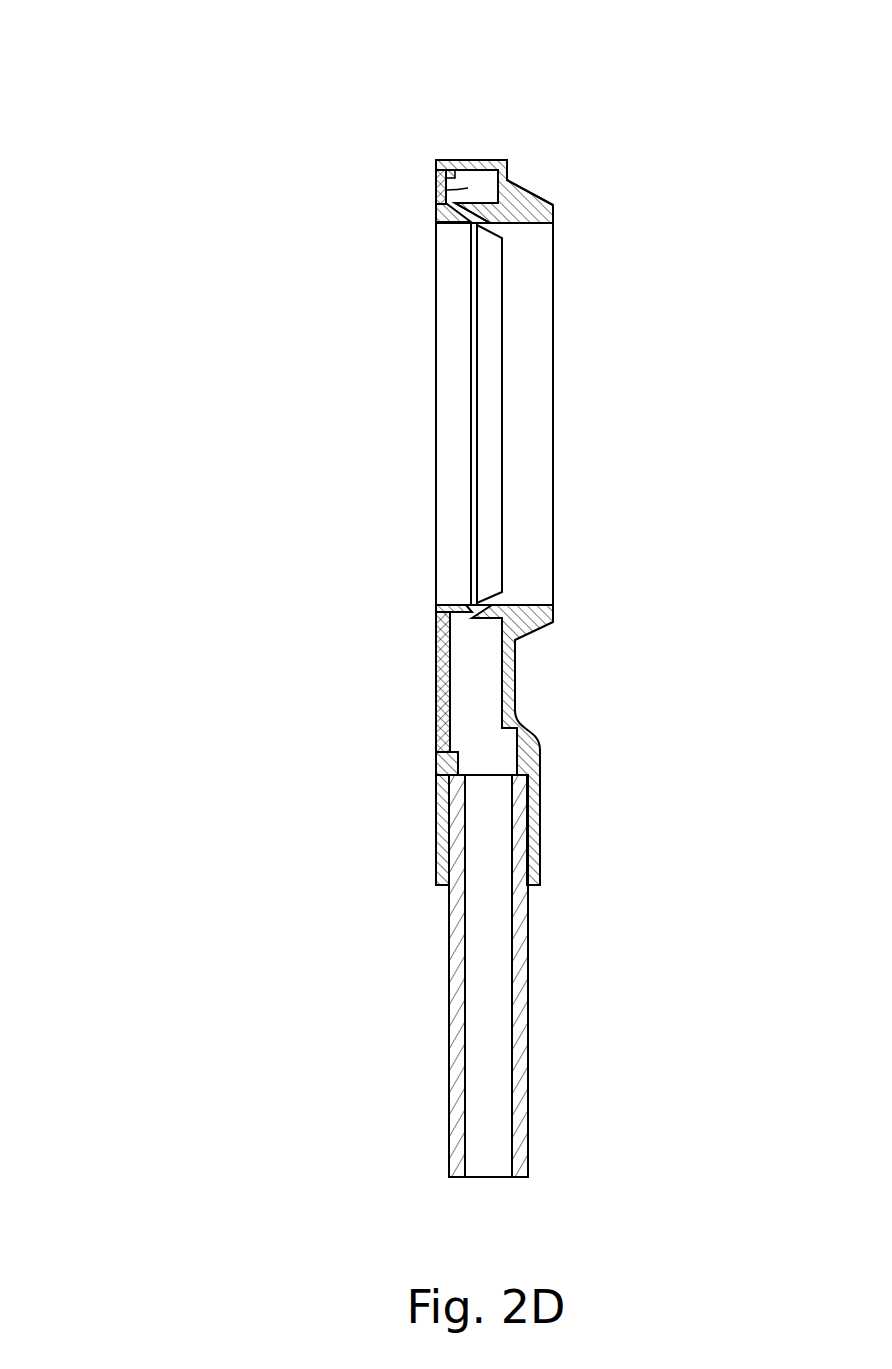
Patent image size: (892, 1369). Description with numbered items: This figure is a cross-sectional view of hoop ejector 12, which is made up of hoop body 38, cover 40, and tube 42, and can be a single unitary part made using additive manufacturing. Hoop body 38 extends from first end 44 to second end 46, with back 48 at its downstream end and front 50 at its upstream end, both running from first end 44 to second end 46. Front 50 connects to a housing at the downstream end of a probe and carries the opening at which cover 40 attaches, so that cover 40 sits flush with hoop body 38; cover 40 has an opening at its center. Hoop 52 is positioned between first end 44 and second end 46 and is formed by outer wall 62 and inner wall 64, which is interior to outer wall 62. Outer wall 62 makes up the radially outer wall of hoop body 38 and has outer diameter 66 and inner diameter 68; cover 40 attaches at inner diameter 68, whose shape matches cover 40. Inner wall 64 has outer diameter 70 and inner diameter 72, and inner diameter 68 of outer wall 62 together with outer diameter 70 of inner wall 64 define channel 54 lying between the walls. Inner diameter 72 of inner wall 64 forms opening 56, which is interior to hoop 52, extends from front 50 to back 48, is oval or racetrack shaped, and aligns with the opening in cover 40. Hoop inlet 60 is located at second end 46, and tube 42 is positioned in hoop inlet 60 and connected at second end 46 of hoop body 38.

The hoop ejector 12 is at (165, 92).
The hoop body 38 is at (362, 571).
The cover 40 is at (446, 190).
The tube 42 is at (482, 1034).
The first end 44 is at (478, 160).
The second end 46 is at (532, 888).
The back 48 is at (556, 612).
The front 50 is at (437, 772).
The hoop 52 is at (508, 178).
The channel 54 is at (436, 200).
The opening 56 is at (520, 402).
The hoop inlet 60 is at (436, 826).
The outer wall 62 is at (495, 160).
The inner wall 64 is at (460, 216).
The outer diameter 66 is at (452, 160).
The inner diameter 68 is at (436, 180).
The outer diameter 70 is at (510, 163).
The inner diameter 72 is at (465, 216).